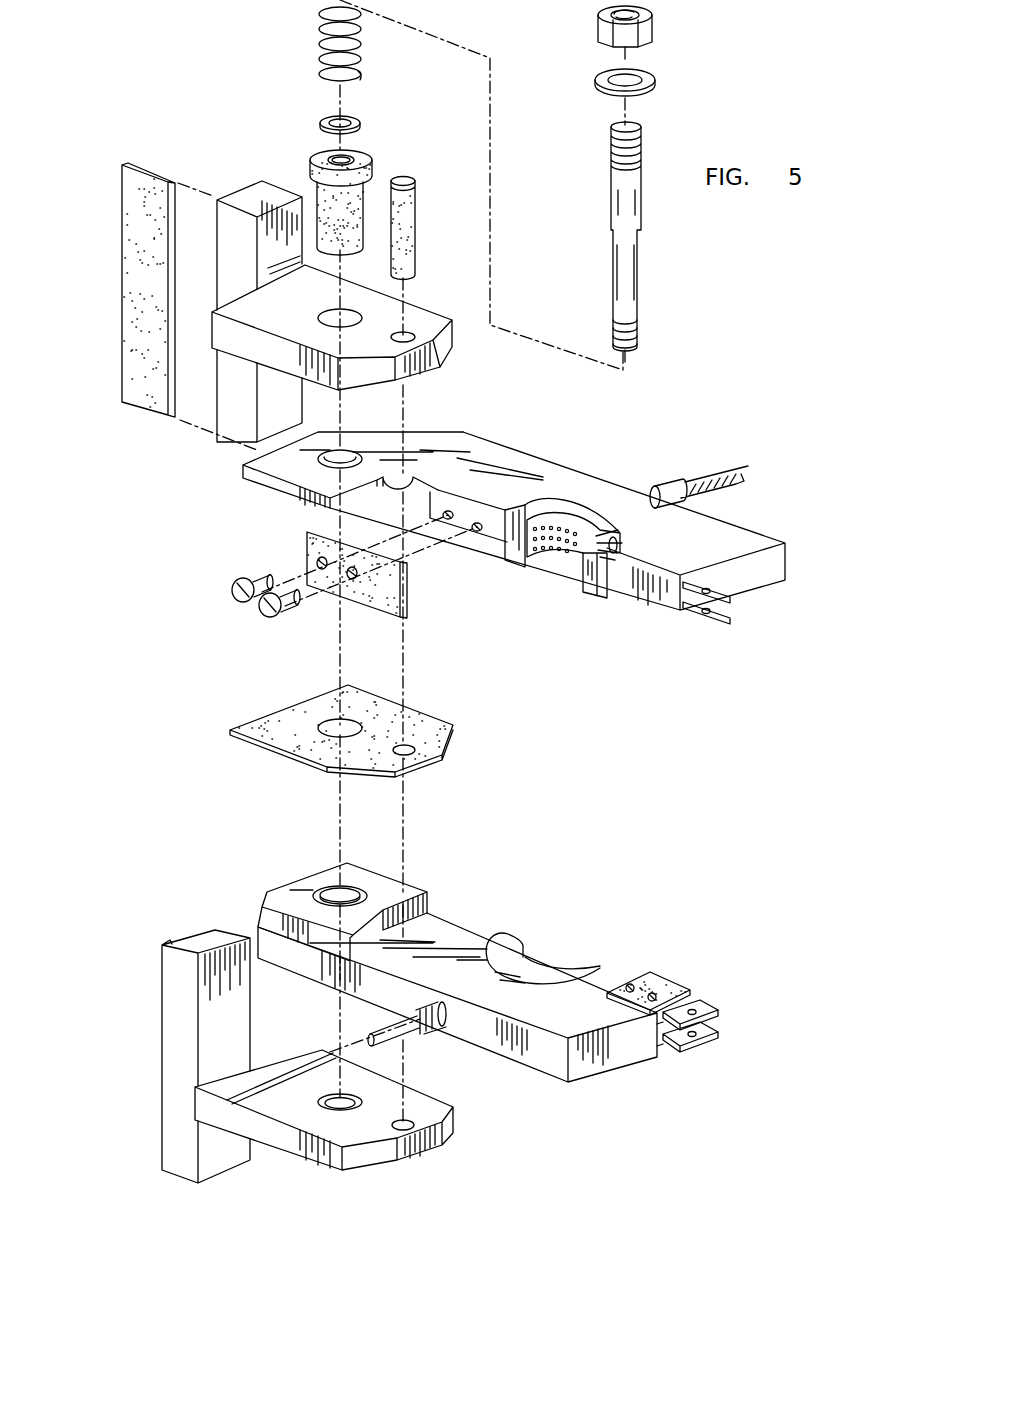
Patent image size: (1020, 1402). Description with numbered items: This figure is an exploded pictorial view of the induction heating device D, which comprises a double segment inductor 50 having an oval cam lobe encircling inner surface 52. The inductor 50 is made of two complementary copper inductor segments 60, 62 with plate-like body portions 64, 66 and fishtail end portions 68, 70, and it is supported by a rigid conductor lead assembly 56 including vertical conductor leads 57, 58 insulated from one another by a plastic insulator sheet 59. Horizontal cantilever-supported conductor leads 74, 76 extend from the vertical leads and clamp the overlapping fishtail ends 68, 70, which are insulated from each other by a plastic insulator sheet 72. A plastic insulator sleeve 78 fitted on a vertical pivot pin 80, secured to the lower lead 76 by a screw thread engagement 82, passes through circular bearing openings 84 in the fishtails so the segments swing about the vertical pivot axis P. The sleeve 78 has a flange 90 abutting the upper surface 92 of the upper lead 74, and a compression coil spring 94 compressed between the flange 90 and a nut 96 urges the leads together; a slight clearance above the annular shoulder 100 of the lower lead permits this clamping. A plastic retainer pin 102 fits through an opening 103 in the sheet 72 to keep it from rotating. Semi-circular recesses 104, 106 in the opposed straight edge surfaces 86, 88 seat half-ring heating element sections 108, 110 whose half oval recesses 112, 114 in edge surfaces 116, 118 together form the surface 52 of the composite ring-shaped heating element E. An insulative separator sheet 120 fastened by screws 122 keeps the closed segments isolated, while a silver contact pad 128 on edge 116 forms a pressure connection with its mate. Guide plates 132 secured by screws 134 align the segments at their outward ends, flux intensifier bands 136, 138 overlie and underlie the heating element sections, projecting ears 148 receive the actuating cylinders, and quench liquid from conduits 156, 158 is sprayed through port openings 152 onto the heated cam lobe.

The double segment inductor 50 is at (738, 508).
The cam lobe encircling inner surface 52 is at (546, 498).
The rigid conductor lead assembly 56 is at (197, 648).
The vertical conductor lead 57 is at (226, 237).
The vertical conductor lead 58 is at (175, 966).
The plastic insulator sheet 59 is at (138, 179).
The inductor segment 60 is at (548, 445).
The inductor segment 62 is at (459, 916).
The body portion 64 is at (752, 538).
The body portion 66 is at (545, 1062).
The fishtail end portion 68 is at (303, 499).
The fishtail end portion 70 is at (310, 882).
The plastic insulator sheet 72 is at (275, 715).
The conductor lead 74 is at (417, 313).
The conductor lead 76 is at (424, 1100).
The plastic insulator sleeve 78 is at (318, 193).
The vertical pivot pin 80 is at (632, 268).
The screw thread engagement 82 is at (637, 333).
The circular bearing openings 84 is at (349, 450).
The straight edge surface 86 is at (666, 600).
The straight edge surface 88 is at (620, 982).
The flange 90 is at (365, 167).
The upper surface 92 is at (372, 297).
The compression coil spring 94 is at (318, 46).
The nut 96 is at (655, 29).
The annular shoulder 100 is at (330, 1097).
The plastic retainer pin 102 is at (416, 210).
The opening 103 is at (420, 753).
The semi-circular recess 104 is at (622, 541).
The semi-circular recess 106 is at (580, 978).
The half-ring shaped inductor heating element section 108 is at (578, 497).
The half-ring shaped inductor heating element section 110 is at (524, 953).
The cam lobe accommodating recess 112 is at (550, 558).
The cam lobe accommodating recess 114 is at (548, 966).
The edge surface 116 is at (514, 545).
The edge surface 118 is at (506, 938).
The insulative separator sheet 120 is at (397, 595).
The fastening screws 122 is at (258, 612).
The electrical contact pad 128 is at (597, 592).
The guide plates 132 is at (673, 987).
The fastening screws 134 is at (653, 994).
The flux intensifier band 136 is at (565, 506).
The flux intensifier band 138 is at (575, 568).
The projecting ears 148 is at (700, 606).
The port openings 152 is at (570, 555).
The conduit 156 is at (713, 478).
The conduit 158 is at (408, 1040).
The induction heating device D is at (690, 399).
The composite ring-shaped induction heating element E is at (523, 497).
The vertical pivot axis P is at (337, 620).